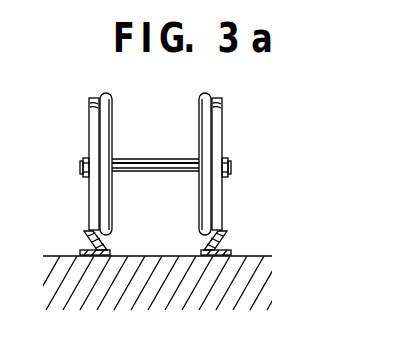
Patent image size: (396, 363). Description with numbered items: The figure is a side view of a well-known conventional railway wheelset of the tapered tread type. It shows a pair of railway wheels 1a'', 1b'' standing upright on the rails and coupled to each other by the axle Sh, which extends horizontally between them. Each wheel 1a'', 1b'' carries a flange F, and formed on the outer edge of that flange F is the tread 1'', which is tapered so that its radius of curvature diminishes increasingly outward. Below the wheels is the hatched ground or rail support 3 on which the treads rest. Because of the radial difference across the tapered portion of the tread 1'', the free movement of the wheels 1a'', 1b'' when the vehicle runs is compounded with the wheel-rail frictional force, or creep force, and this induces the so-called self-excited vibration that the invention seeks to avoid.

The railway wheel 1a'' is at (249, 164).
The railway wheel 1b'' is at (65, 164).
The tapered tread profile 1'' is at (150, 152).
The flange F is at (113, 108).
The axle Sh is at (157, 170).
The base / ground support with feet 3 is at (104, 247).